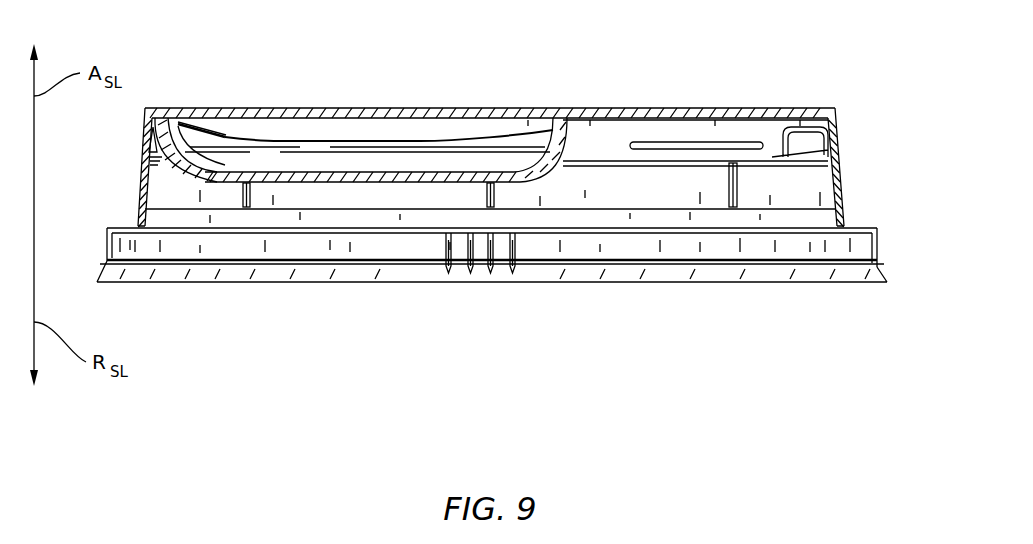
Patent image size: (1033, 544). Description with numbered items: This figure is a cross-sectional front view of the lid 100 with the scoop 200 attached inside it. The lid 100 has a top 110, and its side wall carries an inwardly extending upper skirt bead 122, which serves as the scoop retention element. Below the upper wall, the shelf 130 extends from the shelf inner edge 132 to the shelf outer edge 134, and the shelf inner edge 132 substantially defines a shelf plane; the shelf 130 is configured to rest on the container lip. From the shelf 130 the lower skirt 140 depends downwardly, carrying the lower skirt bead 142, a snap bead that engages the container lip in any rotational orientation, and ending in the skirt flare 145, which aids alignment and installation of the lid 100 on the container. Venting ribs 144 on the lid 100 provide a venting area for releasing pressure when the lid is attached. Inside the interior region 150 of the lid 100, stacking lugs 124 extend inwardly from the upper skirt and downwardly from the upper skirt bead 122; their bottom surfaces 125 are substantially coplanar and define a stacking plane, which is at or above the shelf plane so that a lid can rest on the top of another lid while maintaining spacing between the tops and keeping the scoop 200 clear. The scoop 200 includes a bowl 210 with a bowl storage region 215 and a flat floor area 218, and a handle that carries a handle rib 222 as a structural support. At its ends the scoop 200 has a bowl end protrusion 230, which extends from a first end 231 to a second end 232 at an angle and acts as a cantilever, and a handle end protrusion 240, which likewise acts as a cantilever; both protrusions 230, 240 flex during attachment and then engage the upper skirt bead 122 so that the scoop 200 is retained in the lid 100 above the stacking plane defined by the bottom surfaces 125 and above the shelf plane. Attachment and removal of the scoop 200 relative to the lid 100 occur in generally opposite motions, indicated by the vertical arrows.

The lid 100 is at (785, 352).
The top 110 is at (678, 110).
The upper skirt bead 122 is at (143, 172).
The stacking lugs 124 is at (183, 165).
The stacking lug bottom surfaces 125 is at (163, 208).
The shelf 130 is at (122, 231).
The shelf inner edge 132 is at (144, 232).
The shelf outer edge 134 is at (107, 229).
The lower skirt 140 is at (107, 246).
The lower skirt bead 142 is at (635, 262).
The venting ribs 144 is at (512, 274).
The skirt flare 145 is at (100, 282).
The interior region 150 is at (673, 214).
The scoop 200 is at (220, 226).
The bowl 210 is at (297, 128).
The bowl storage region 215 is at (451, 154).
The flat floor area 218 is at (390, 184).
The handle rib 222 is at (622, 145).
The bowl end protrusion 230 is at (152, 137).
The first end 231 is at (155, 185).
The second end 232 is at (150, 163).
The handle end protrusion 240 is at (833, 118).